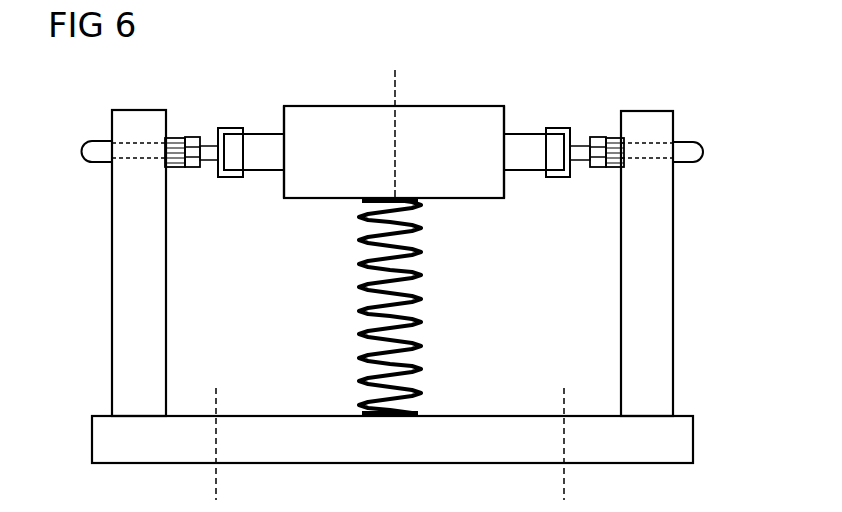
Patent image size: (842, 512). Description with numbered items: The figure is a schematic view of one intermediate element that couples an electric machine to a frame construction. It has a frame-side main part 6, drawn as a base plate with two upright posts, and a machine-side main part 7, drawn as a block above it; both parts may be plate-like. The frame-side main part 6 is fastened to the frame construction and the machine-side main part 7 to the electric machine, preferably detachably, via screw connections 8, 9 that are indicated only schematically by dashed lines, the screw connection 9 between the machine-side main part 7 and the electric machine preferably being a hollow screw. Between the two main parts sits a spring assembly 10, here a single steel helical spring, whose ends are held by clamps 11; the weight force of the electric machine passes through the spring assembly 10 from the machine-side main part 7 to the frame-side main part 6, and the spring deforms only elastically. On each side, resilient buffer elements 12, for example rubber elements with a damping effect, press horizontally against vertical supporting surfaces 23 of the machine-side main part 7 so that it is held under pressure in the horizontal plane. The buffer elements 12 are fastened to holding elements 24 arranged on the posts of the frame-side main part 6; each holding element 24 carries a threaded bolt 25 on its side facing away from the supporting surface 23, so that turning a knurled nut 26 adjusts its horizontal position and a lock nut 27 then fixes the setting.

The frame-side main part 6 is at (693, 432).
The machine-side main part 7 is at (348, 107).
The screw connection 8 is at (217, 478).
The screw connection 9 is at (396, 76).
The spring assembly 10 is at (421, 295).
The clamp 11 is at (360, 201).
The buffer element 12 is at (265, 172).
The supporting surface 23 is at (283, 106).
The holding element 24 is at (235, 127).
The threaded bolt 25 is at (95, 140).
The knurled nut 26 is at (180, 137).
The lock nut 27 is at (190, 169).